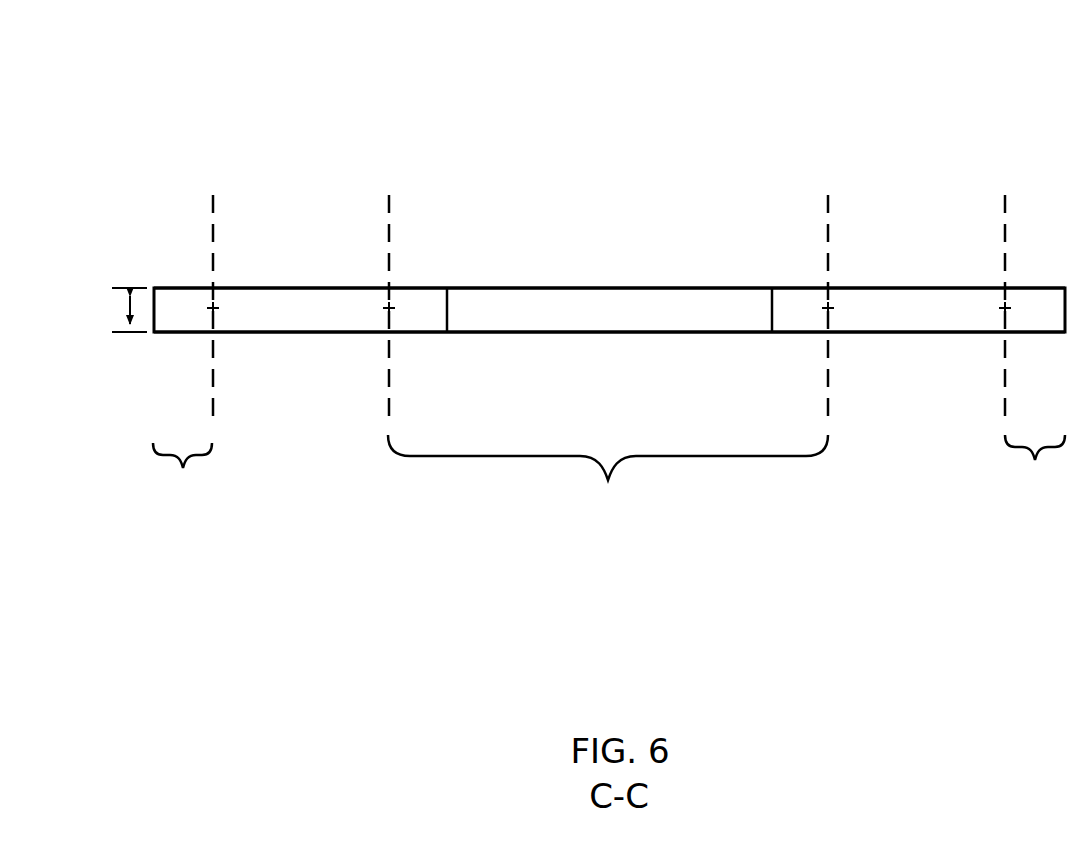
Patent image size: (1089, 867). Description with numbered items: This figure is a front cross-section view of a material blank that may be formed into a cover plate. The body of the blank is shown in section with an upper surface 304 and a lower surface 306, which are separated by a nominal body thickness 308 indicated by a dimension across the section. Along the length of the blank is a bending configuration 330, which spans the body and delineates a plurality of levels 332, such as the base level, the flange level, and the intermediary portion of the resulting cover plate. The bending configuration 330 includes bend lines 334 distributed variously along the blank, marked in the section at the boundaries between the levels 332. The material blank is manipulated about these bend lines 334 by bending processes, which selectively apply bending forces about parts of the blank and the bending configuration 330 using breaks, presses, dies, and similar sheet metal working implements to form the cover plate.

The upper surface 304 is at (212, 288).
The lower surface 306 is at (185, 333).
The nominal body thickness 308 is at (122, 312).
The bending configuration 330 is at (915, 177).
The levels 332 is at (1018, 462).
The bend lines 334 is at (1005, 230).